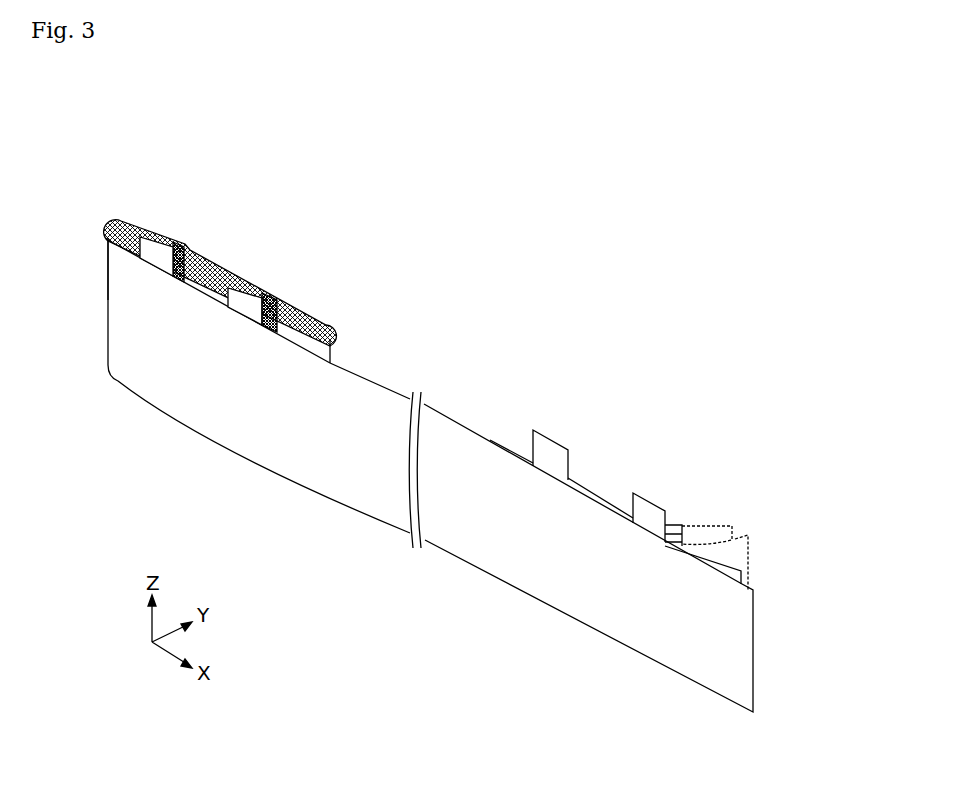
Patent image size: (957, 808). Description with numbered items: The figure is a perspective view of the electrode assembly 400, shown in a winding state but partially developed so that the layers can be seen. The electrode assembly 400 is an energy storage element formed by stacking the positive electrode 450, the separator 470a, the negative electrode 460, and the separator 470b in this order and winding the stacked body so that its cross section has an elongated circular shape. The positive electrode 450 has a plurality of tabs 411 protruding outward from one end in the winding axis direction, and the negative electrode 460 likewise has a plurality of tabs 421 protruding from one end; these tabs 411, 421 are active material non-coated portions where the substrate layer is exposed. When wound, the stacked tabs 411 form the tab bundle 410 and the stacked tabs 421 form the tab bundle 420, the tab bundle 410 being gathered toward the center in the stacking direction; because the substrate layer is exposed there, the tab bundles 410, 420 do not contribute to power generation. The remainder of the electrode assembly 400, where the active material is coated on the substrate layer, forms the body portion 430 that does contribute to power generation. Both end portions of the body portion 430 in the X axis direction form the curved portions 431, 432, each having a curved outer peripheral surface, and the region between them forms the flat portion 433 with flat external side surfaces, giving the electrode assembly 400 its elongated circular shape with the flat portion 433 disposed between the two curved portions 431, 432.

The electrode assembly 400 is at (602, 274).
The tab bundle 410 is at (183, 237).
The tab 411 is at (552, 441).
The tab bundle 420 is at (262, 282).
The tab 421 is at (647, 500).
The body portion 430 is at (118, 293).
The curved portion 431 is at (108, 230).
The curved portion 432 is at (332, 342).
The flat portion 433 is at (222, 265).
The positive electrode 450 is at (593, 485).
The negative electrode 460 is at (683, 540).
The separator 470a is at (748, 533).
The separator 470b is at (710, 540).